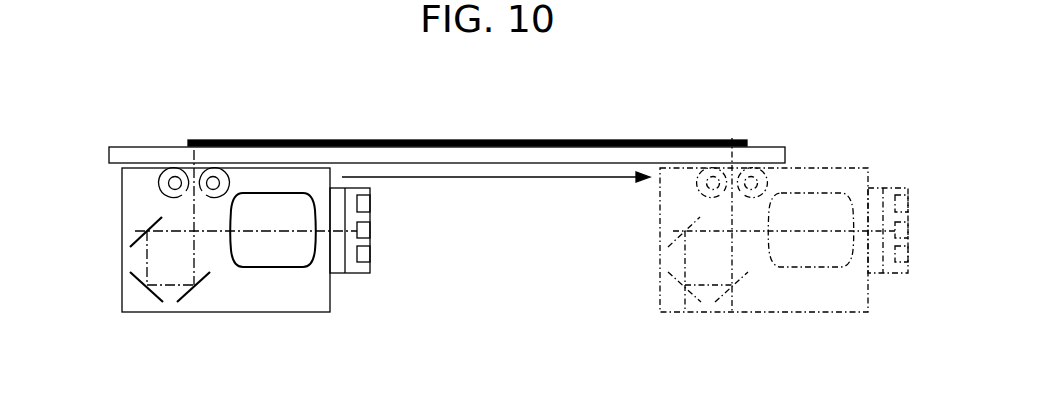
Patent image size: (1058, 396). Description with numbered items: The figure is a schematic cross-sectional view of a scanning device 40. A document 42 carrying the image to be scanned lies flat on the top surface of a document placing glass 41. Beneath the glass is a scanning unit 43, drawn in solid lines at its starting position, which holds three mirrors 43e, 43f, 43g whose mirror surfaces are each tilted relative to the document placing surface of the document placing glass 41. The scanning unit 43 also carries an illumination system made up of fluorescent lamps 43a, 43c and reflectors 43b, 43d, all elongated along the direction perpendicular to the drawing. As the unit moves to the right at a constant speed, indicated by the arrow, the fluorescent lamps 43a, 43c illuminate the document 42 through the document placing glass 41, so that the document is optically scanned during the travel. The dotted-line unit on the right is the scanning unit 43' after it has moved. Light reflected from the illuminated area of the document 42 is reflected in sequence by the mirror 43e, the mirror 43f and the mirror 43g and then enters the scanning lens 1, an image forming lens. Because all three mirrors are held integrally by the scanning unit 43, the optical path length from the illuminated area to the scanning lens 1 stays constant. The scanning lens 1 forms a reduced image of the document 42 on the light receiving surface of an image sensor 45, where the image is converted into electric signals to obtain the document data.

The scanning device 40 is at (795, 79).
The document placing glass 41 is at (137, 147).
The document 42 is at (565, 141).
The scanning unit 43 is at (213, 229).
The scanning unit having moved 43' is at (784, 248).
The fluorescent lamp 43a is at (161, 186).
The reflector 43b is at (166, 196).
The fluorescent lamp 43c is at (203, 178).
The reflector 43d is at (229, 177).
The mirror 43e is at (138, 240).
The mirror 43f is at (140, 287).
The mirror 43g is at (191, 290).
The scanning lens 1 is at (287, 267).
The image sensor 45 is at (360, 274).